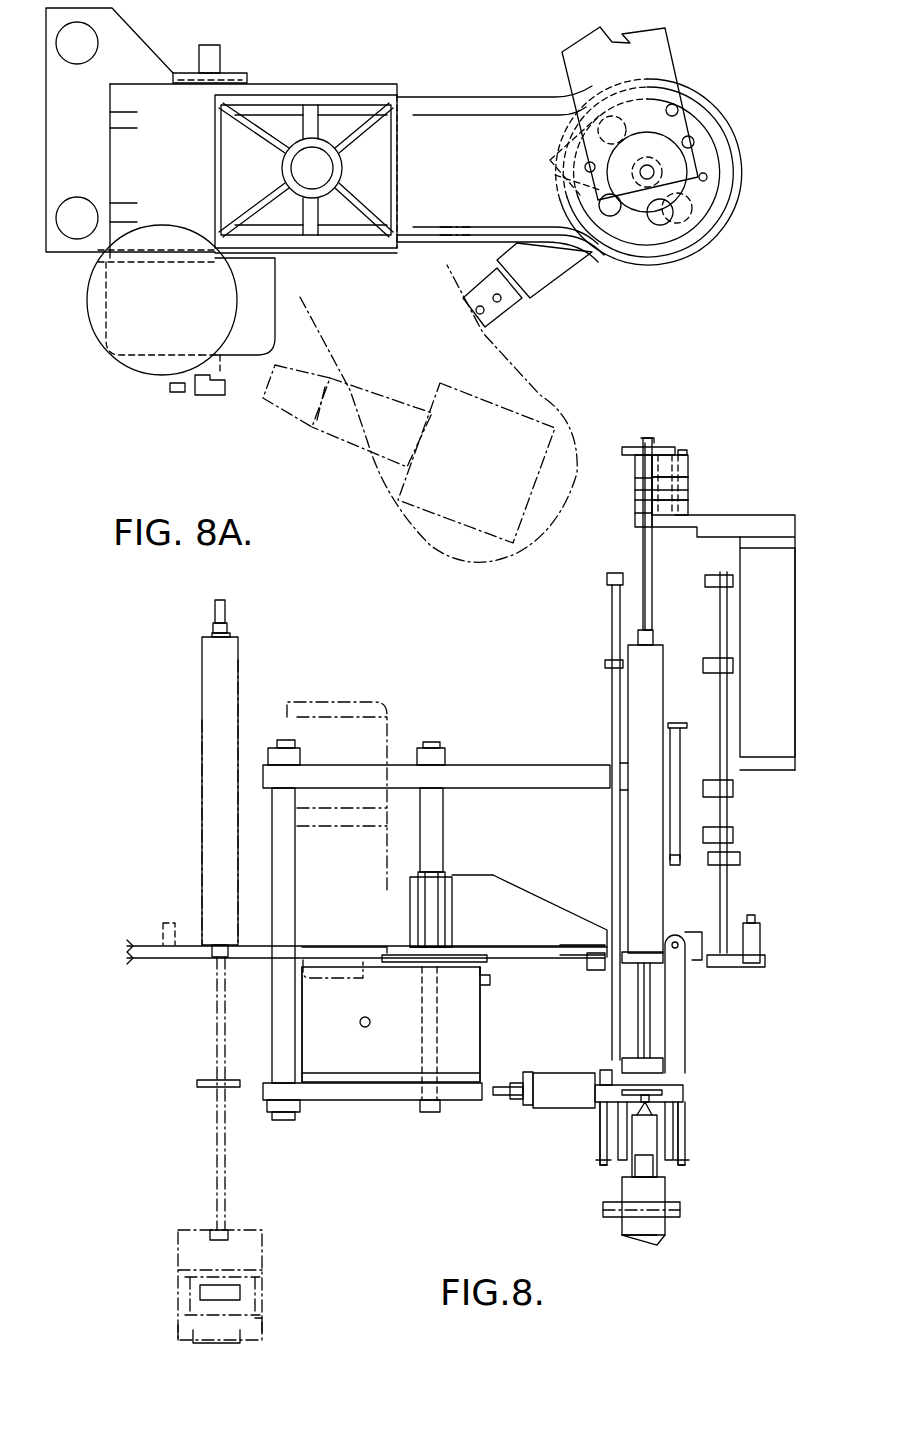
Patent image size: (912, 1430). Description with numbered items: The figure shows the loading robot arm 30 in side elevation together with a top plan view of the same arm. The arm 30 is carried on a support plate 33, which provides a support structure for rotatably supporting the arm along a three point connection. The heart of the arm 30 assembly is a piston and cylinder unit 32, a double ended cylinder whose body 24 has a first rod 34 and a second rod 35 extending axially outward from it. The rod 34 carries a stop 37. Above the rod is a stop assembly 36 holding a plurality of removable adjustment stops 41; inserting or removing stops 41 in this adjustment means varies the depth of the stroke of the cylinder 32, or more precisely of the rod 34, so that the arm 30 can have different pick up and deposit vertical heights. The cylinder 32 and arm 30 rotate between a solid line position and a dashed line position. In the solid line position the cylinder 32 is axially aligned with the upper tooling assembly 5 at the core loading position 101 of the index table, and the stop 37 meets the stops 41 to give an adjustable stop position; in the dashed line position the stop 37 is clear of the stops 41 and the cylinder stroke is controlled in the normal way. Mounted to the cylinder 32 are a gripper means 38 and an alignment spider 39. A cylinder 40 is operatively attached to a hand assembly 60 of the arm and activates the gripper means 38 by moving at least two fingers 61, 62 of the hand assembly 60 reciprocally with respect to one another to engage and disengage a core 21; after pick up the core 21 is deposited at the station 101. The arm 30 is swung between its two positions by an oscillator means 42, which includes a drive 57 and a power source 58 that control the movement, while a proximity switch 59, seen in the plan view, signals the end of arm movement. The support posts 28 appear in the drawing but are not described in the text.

In FIG. 8, the operating position 5 is at (676, 1233).
In FIG. 8, the core 21 is at (194, 1337).
In FIG. 8, the body 24 is at (665, 806).
In FIG. 8, the support posts 28 is at (280, 738).
In FIG. 8A, the robot arm 30 is at (441, 87).
In FIG. 8, the robot arm 30 is at (361, 1115).
In FIG. 8, the piston and cylinder unit 32 is at (653, 706).
In FIG. 8, the support plate 33 is at (517, 770).
In FIG. 8, the first rod 34 is at (645, 558).
In FIG. 8, the second rod 35 is at (645, 1012).
In FIG. 8A, the stop assembly 36 is at (675, 68).
In FIG. 8, the stop assembly 36 is at (700, 468).
In FIG. 8, the stop 37 is at (660, 447).
In FIG. 8, the gripper means 38 is at (701, 1138).
In FIG. 8, the alignment spider 39 is at (667, 1150).
In FIG. 8A, the cylinder 40 is at (565, 275).
In FIG. 8, the cylinder 40 is at (550, 1108).
In FIG. 8, the adjustment stops 41 is at (688, 497).
In FIG. 8, the oscillator means 42 is at (462, 1024).
In FIG. 8, the drive 57 is at (392, 1060).
In FIG. 8, the power source 58 is at (362, 860).
In FIG. 8A, the proximity switch 59 is at (201, 406).
In FIG. 8, the hand assembly 60 is at (685, 1098).
In FIG. 8, the finger 61 is at (600, 1155).
In FIG. 8, the finger 62 is at (688, 1155).
In FIG. 8, the core loading position 101 is at (643, 1226).